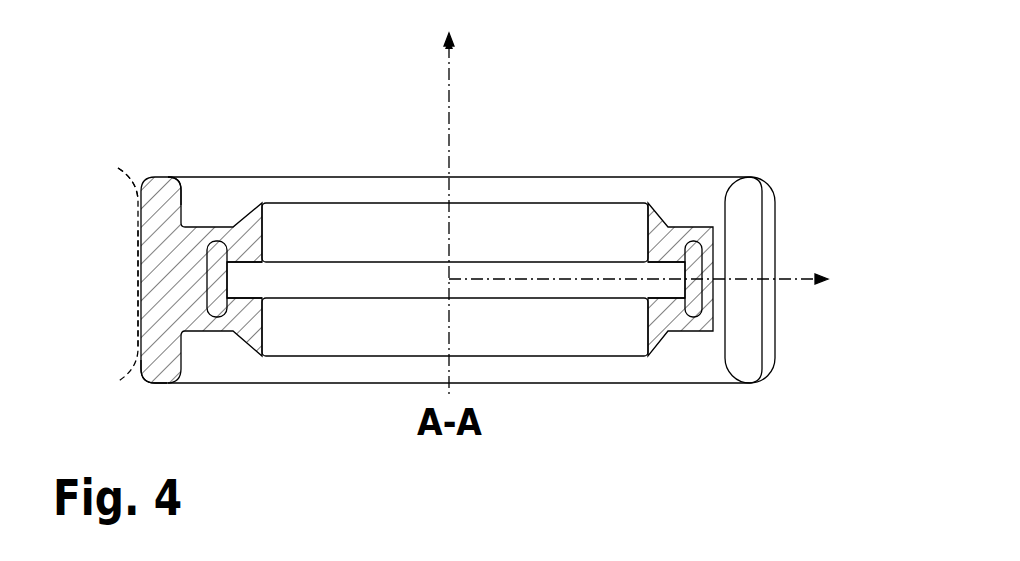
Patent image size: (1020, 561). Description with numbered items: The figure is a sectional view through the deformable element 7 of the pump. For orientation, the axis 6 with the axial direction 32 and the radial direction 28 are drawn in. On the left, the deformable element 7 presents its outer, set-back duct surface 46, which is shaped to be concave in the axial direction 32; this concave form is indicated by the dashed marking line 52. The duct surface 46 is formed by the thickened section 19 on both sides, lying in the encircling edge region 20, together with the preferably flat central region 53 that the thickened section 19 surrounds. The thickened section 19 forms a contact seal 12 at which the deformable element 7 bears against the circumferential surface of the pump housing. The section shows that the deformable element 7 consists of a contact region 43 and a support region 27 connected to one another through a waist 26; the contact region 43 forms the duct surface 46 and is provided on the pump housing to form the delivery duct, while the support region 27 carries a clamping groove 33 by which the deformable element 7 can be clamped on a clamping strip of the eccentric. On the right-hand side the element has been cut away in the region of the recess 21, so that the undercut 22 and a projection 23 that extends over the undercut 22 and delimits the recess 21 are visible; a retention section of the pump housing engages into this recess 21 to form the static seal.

The axis 6 is at (450, 85).
The deformable element 7 is at (827, 64).
The contact seal 12 is at (145, 177).
The thickened section 19 is at (143, 177).
The edge region 20 is at (162, 177).
The recess 21 is at (726, 275).
The undercut 22 is at (720, 315).
The projection 23 is at (750, 193).
The waist 26 is at (203, 345).
The support region 27 is at (270, 327).
The radial direction 28 is at (800, 277).
The axial direction 32 is at (452, 49).
The clamping groove 33 is at (373, 273).
The contact region 43 is at (152, 388).
The set-back duct surface 46 is at (135, 283).
The marking line 52 is at (138, 184).
The central region 53 is at (140, 251).